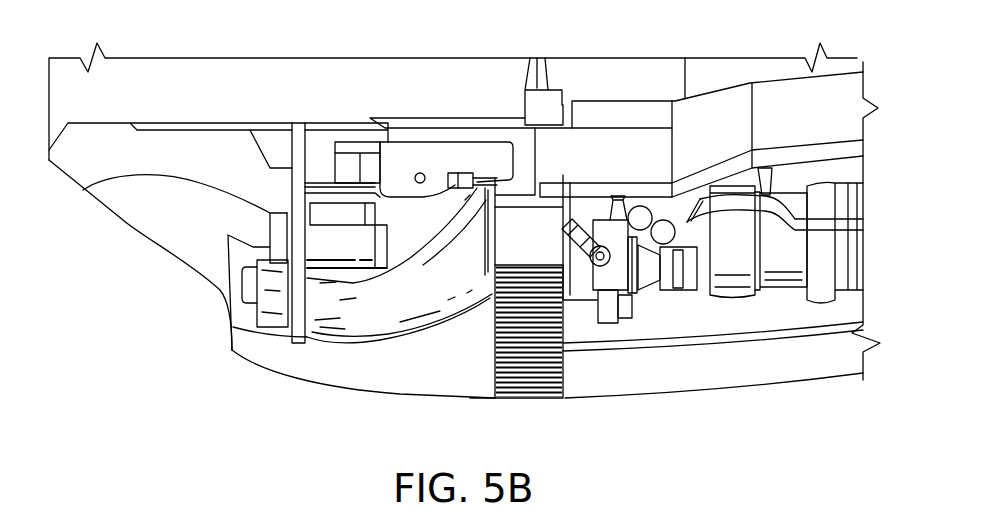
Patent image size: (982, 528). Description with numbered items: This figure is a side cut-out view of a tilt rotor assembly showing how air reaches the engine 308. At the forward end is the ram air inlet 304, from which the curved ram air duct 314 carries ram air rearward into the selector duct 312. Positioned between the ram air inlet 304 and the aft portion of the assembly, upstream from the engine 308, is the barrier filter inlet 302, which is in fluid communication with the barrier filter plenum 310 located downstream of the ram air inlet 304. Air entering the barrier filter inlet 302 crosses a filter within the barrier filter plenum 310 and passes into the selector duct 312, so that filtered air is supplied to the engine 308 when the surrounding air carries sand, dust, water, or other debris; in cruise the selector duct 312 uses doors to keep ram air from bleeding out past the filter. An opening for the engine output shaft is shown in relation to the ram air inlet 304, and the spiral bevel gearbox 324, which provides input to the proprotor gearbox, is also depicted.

The barrier filter inlet 302 is at (531, 392).
The ram air inlet 304 is at (221, 303).
The engine 308 is at (732, 297).
The barrier filter plenum 310 is at (560, 377).
The selector duct 312 is at (521, 201).
The ram air duct 314 is at (403, 305).
The spiral bevel gearbox 324 is at (343, 252).